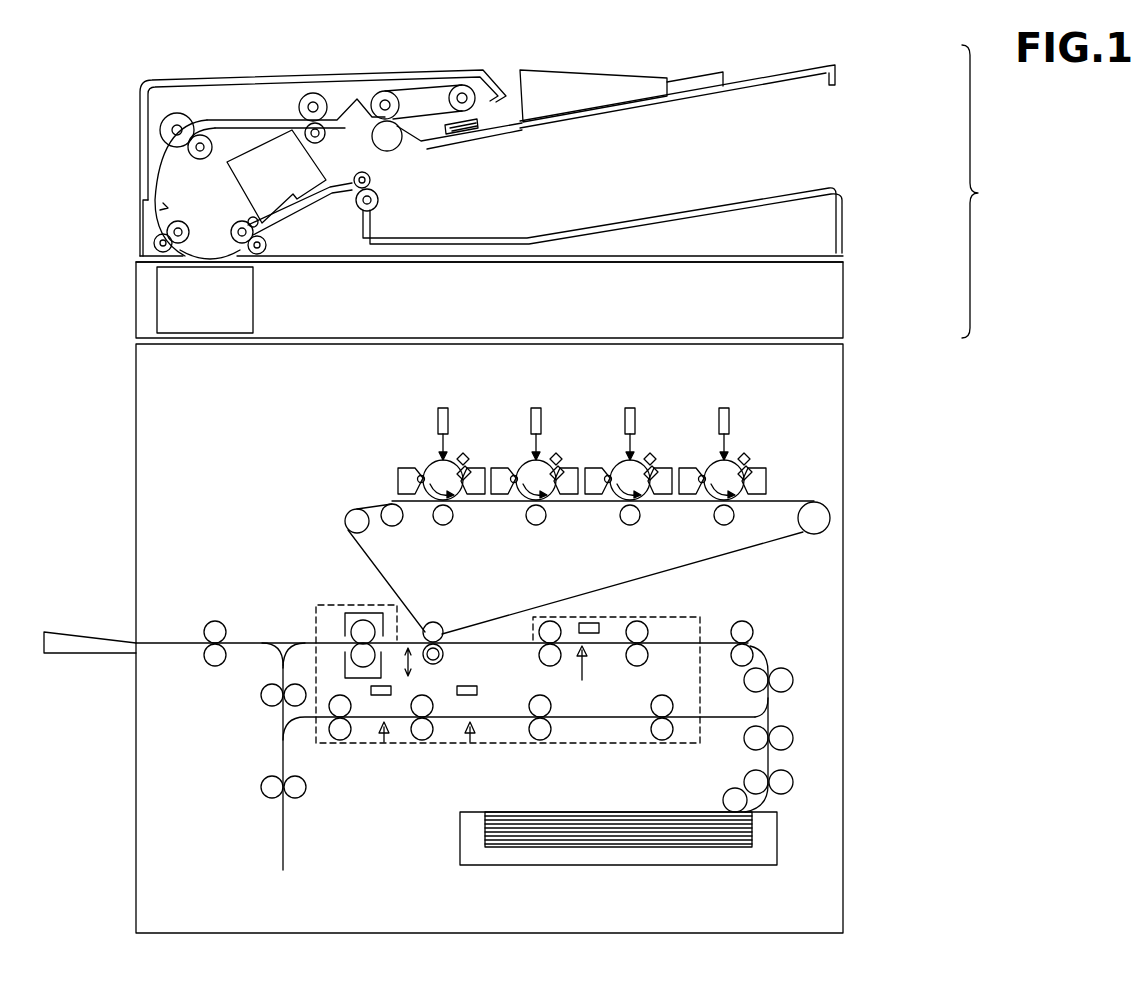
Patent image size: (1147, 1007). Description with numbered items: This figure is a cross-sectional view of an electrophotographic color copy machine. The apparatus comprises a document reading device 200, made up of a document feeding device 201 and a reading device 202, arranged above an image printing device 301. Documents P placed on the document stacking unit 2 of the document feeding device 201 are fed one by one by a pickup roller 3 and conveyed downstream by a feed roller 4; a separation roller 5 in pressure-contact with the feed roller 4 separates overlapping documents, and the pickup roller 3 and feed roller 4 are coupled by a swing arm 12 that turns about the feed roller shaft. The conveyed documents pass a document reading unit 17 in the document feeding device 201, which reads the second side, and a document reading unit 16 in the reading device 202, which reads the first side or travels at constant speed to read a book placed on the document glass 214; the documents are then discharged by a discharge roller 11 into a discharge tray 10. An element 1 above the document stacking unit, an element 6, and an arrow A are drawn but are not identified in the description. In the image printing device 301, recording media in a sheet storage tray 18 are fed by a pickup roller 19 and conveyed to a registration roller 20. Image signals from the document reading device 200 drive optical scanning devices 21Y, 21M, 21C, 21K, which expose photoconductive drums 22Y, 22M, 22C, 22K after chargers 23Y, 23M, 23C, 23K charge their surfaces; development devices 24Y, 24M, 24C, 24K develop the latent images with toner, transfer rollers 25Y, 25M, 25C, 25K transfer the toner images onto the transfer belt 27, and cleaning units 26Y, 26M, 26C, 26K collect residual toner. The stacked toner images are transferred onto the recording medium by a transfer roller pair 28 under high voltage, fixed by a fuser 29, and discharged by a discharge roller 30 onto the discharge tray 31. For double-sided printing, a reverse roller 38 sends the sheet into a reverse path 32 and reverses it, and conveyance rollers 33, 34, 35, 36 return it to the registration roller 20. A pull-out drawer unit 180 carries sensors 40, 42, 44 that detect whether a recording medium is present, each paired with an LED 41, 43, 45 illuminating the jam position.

The document 1 is at (582, 84).
The document stacking unit 2 is at (750, 80).
The pickup roller 3 is at (463, 90).
The feed roller 4 is at (385, 97).
The separation roller 5 is at (390, 145).
The conveyance roller 6 is at (314, 99).
The discharge tray 10 is at (705, 206).
The discharge roller 11 is at (379, 201).
The swing arm 12 is at (420, 95).
The document reading unit 16 is at (157, 300).
The document reading unit 17 is at (262, 155).
The sheet storage tray 18 is at (460, 838).
The pickup roller 19 is at (725, 800).
The registration roller 20 is at (452, 727).
The optical scanning device 21Y is at (437, 414).
The optical scanning device 21M is at (535, 407).
The optical scanning device 21C is at (628, 407).
The optical scanning device 21K is at (724, 407).
The photoconductive drum 22Y is at (428, 468).
The photoconductive drum 22M is at (521, 468).
The photoconductive drum 22C is at (615, 468).
The photoconductive drum 22K is at (708, 468).
The charger 23Y is at (462, 451).
The charger 23M is at (556, 451).
The charger 23C is at (650, 451).
The charger 23K is at (746, 451).
The development device 24Y is at (480, 496).
The development device 24M is at (573, 496).
The development device 24C is at (668, 496).
The development device 24K is at (767, 482).
The transfer roller 25Y is at (443, 526).
The transfer roller 25M is at (536, 526).
The transfer roller 25C is at (630, 526).
The transfer roller 25K is at (728, 526).
The cleaning unit 26Y is at (398, 484).
The cleaning unit 26M is at (506, 496).
The cleaning unit 26C is at (598, 496).
The cleaning unit 26K is at (690, 496).
The transfer belt 27 is at (814, 535).
The transfer roller pair 28 is at (446, 657).
The fuser 29 is at (358, 612).
The discharge roller 30 is at (215, 667).
The discharge tray 31 is at (92, 636).
The reverse path 32 is at (285, 850).
The conveyance roller 33 is at (306, 792).
The conveyance roller 34 is at (422, 741).
The conveyance roller 35 is at (540, 741).
The conveyance roller 36 is at (662, 741).
The reverse roller 38 is at (260, 787).
The sensor 40 is at (605, 669).
The LED 41 is at (592, 635).
The sensor 42 is at (470, 745).
The LED 43 is at (470, 697).
The sensor 44 is at (384, 745).
The LED 45 is at (381, 697).
The drawer unit 180 is at (320, 604).
The document reading device 200 is at (996, 191).
The document feeding device 201 is at (549, 139).
The reading device 202 is at (520, 300).
The document glass 214 is at (640, 263).
The image printing device 301 is at (853, 493).
The documents P is at (520, 118).
The conveyance direction A is at (760, 700).